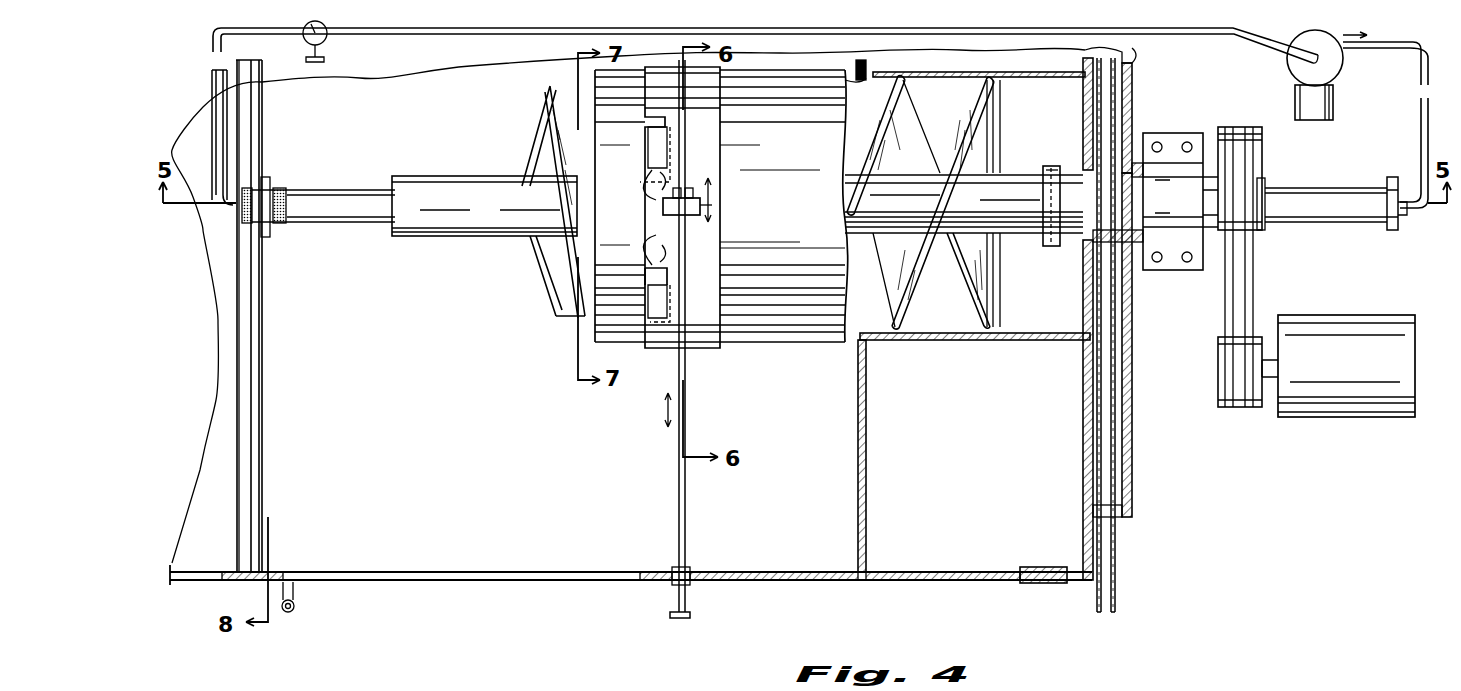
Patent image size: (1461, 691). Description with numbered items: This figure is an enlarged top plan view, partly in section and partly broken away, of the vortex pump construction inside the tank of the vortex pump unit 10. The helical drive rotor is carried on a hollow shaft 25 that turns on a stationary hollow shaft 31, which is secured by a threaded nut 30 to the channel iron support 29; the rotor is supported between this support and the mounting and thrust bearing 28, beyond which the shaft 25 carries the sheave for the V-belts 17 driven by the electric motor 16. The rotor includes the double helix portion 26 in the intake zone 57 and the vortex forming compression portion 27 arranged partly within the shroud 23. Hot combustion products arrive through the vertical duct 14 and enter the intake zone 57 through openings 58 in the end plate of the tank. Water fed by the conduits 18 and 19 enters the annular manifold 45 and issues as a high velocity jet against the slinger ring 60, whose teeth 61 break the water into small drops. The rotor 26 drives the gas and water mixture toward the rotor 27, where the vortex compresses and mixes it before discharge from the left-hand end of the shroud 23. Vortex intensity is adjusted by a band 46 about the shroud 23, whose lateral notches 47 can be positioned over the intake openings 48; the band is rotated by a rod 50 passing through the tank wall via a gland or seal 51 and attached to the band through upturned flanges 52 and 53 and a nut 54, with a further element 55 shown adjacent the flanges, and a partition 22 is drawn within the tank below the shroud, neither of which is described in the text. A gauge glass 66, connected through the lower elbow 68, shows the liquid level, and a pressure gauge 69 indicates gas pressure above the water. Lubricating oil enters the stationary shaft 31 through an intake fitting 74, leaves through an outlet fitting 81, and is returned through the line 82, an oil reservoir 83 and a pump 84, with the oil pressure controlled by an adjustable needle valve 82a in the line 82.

The vortex pump unit 10 is at (559, 591).
The vertical duct 14 is at (1128, 457).
The electric motor 16 is at (1384, 377).
The V-belts 17 is at (1252, 312).
The conduit 18 is at (1116, 568).
The conduit 19 is at (1132, 92).
The partition 22 is at (866, 446).
The shroud 23 is at (818, 336).
The shaft 25 is at (490, 237).
The double helix portion 26 is at (908, 340).
The vortex forming compression portion 27 is at (538, 300).
The mounting and thrust bearing 28 is at (1193, 183).
The channel iron support 29 is at (262, 412).
The threaded nut 30 is at (270, 180).
The stationary hollow shaft 31 is at (345, 225).
The annular manifold 45 is at (1132, 270).
The band 46 is at (706, 345).
The lateral notches 47 is at (650, 260).
The intake openings 48 is at (650, 145).
The rod 50 is at (690, 413).
The gland or seal 51 is at (670, 585).
The upturned flange 52 is at (712, 218).
The upturned flange 53 is at (716, 192).
The nut 54 is at (686, 188).
The stem 55 is at (714, 208).
The intake zone 57 is at (1038, 154).
The openings 58 is at (1082, 118).
The slinger ring 60 is at (1046, 243).
The teeth 61 is at (1046, 170).
The gauge glass 66 is at (290, 614).
The lower elbow 68 is at (295, 590).
The pressure gauge 69 is at (1042, 583).
The intake fitting 74 is at (1400, 226).
The outlet fitting 81 is at (240, 206).
The line or conduit 82 is at (213, 40).
The adjustable needle valve 82a is at (328, 44).
The oil reservoir 83 is at (1334, 105).
The pump 84 is at (1335, 68).